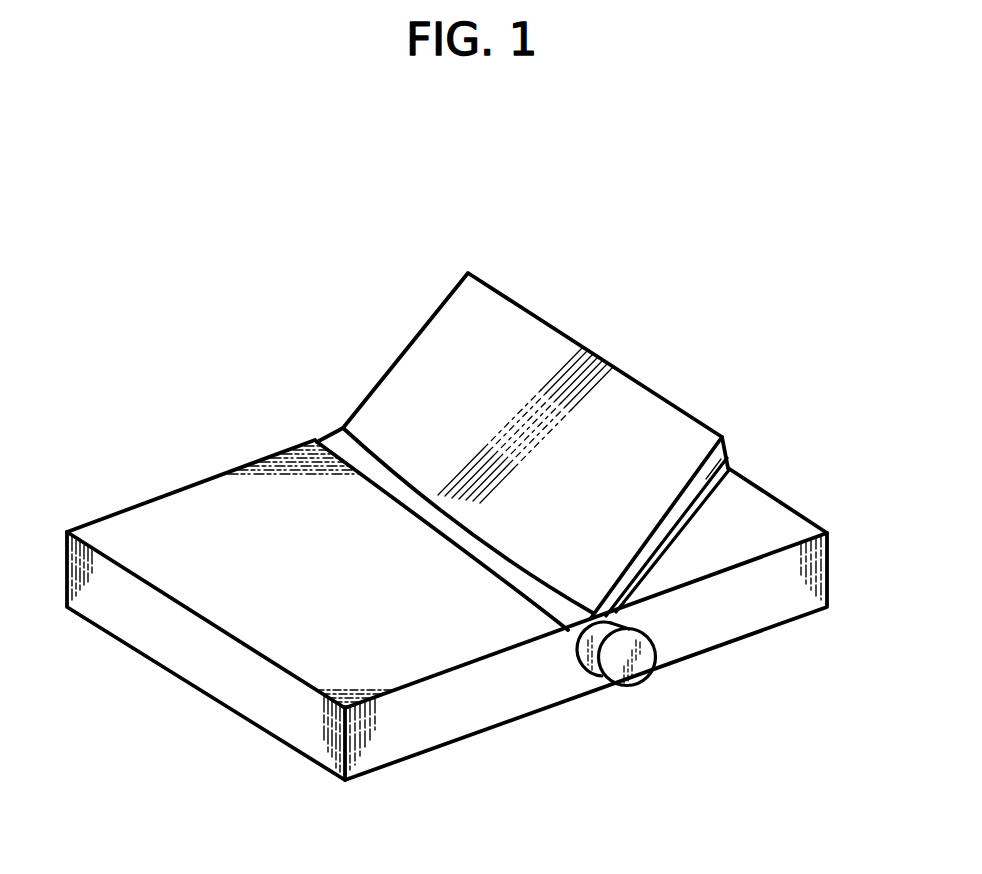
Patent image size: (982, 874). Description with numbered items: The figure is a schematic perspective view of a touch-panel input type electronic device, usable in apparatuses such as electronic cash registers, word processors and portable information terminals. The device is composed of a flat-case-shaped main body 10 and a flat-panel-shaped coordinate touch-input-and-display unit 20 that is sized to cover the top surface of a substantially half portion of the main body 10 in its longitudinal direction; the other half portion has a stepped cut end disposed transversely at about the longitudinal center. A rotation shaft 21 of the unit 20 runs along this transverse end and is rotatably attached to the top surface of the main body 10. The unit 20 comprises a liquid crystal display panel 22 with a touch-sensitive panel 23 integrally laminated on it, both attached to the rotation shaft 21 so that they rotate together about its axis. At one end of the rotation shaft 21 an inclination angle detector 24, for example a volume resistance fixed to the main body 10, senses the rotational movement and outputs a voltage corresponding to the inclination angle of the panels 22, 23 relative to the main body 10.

The main body 10 is at (372, 748).
The coordinate touch-input-and-display unit 20 is at (665, 347).
The rotation shaft 21 is at (316, 440).
The liquid crystal display panel 22 is at (690, 527).
The touch-sensitive panel 23 is at (430, 355).
The inclination angle detector 24 is at (630, 668).